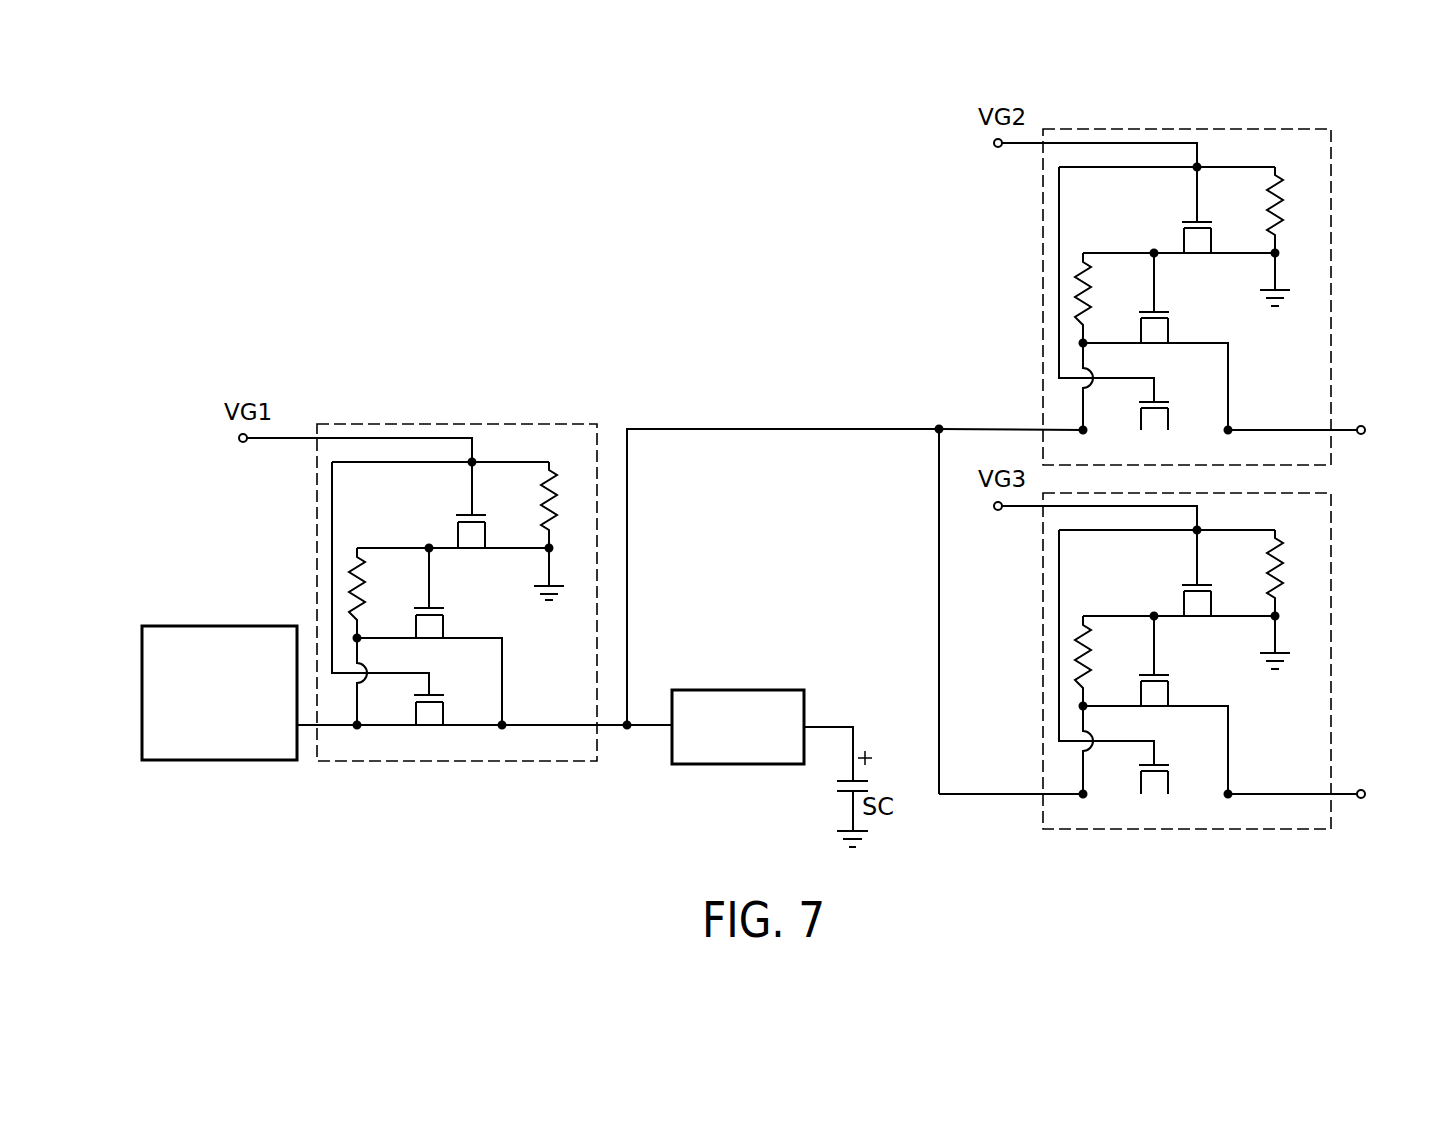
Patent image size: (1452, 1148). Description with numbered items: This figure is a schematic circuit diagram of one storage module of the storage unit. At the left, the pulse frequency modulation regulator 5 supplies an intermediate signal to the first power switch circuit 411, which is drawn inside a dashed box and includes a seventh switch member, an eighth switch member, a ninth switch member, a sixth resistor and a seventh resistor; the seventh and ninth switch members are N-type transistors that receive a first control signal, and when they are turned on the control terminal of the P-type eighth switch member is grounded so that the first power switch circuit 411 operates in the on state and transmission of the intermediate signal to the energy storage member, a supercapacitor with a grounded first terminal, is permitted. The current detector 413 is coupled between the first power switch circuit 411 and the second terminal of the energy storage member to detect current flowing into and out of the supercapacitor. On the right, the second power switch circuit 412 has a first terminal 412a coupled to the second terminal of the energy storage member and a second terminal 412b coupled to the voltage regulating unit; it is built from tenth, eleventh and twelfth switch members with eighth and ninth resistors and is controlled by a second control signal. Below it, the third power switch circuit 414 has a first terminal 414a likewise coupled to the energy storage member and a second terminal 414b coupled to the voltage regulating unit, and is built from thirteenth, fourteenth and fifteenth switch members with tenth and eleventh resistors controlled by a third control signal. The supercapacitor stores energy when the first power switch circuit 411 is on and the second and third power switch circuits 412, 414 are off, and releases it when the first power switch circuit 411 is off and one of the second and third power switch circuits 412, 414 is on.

The pulse frequency modulation regulator 5 is at (215, 625).
The first power switch circuit 411 is at (533, 423).
The second power switch circuit 412 is at (1333, 170).
The first terminal of the second power switch circuit 412a is at (1010, 430).
The second terminal of the second power switch circuit 412b is at (1345, 430).
The current detector 413 is at (755, 690).
The third power switch circuit 414 is at (1333, 532).
The first terminal of the third power switch circuit 414a is at (1060, 795).
The second terminal of the third power switch circuit 414b is at (1291, 795).